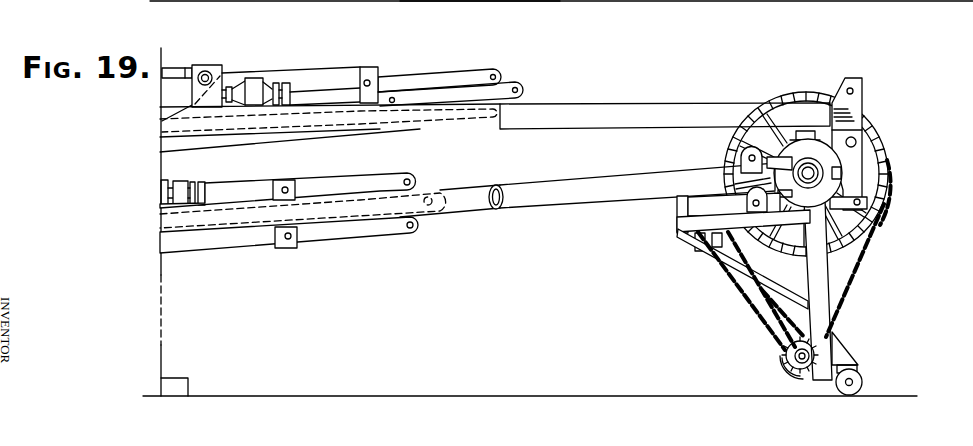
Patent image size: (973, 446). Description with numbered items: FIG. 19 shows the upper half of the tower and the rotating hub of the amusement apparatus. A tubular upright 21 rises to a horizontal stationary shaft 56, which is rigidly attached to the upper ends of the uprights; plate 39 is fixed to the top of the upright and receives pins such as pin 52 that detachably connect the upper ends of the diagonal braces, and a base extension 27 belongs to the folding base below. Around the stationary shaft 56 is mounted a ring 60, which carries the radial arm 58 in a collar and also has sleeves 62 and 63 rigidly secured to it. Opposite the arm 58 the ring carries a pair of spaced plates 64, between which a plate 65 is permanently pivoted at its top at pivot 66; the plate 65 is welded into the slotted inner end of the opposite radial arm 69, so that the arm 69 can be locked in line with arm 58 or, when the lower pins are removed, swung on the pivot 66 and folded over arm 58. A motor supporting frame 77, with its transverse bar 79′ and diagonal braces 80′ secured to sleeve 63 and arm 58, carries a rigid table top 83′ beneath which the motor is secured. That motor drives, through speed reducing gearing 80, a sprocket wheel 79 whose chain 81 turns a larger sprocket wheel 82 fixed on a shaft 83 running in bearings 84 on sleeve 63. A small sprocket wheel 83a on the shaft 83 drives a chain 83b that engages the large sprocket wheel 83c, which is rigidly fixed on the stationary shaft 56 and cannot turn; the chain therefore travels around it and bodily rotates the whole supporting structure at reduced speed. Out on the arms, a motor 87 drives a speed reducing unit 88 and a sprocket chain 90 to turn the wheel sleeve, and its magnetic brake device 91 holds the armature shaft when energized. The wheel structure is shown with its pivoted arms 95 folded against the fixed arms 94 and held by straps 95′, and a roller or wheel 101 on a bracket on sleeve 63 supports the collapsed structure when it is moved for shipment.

The base extension 27 is at (478, 1).
The sprocket chain 90 is at (180, 66).
The speed reducing unit 88 is at (214, 63).
The motor 87 is at (258, 80).
The magnetic brake device 91 is at (289, 83).
The pivoted arm 95 is at (446, 70).
The strap 95′ is at (372, 67).
The fixed arm 94 is at (525, 85).
The radial arm 58 is at (464, 190).
The upright 21 is at (622, 178).
The pin 52 is at (766, 165).
The plate 39 is at (742, 157).
The radial arm 69 is at (728, 104).
The sleeve 62 is at (800, 129).
The plate 65 is at (864, 92).
The pivot 66 is at (858, 141).
The spaced plate 64 is at (865, 155).
The ring 60 is at (842, 173).
The stationary shaft 56 is at (870, 191).
The large sprocket wheel 83c is at (872, 238).
The sprocket chain 83b is at (870, 258).
The sleeve 63 is at (828, 288).
The larger sprocket wheel 82 is at (830, 338).
The roller or wheel 101 is at (872, 381).
The bearing 84 is at (802, 376).
The shaft 83 is at (790, 367).
The small sprocket wheel 83a is at (792, 362).
The sprocket chain 81 is at (742, 308).
The sprocket wheel 79 is at (722, 258).
The speed reducing gearing 80 is at (698, 252).
The motor supporting frame 77 is at (687, 253).
The transverse bar 79′ is at (680, 236).
The diagonal brace 80′ is at (678, 212).
The table top 83′ is at (734, 202).